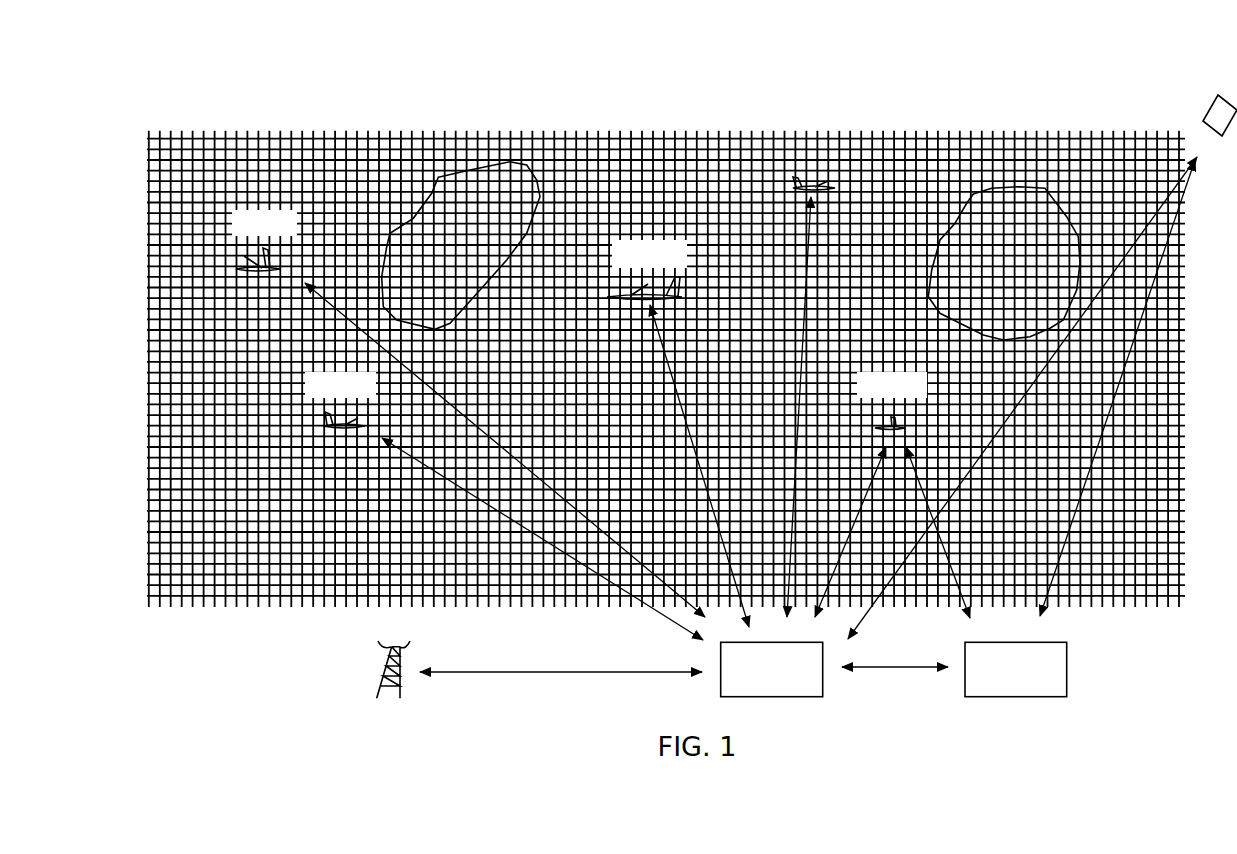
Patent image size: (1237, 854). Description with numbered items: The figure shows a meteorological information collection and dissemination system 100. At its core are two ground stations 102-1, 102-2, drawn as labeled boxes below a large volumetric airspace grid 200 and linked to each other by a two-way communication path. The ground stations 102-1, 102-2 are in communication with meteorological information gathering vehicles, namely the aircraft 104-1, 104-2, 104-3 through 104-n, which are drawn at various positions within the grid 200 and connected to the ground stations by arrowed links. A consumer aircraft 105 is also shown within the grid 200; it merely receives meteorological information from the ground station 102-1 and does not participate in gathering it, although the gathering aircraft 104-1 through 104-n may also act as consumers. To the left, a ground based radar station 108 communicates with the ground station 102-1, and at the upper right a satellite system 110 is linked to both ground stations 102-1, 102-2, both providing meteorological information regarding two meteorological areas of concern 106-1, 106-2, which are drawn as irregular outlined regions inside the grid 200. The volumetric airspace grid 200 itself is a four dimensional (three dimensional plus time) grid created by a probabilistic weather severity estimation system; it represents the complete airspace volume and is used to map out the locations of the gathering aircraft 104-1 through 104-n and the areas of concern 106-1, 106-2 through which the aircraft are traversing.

The meteorological information collection and dissemination system 100 is at (1136, 64).
The volumetric airspace grid 200 is at (1170, 509).
The ground station 102-1 is at (823, 683).
The ground station 102-2 is at (1067, 668).
The aircraft 104-1 is at (265, 246).
The aircraft 104-2 is at (340, 414).
The aircraft 104-3 is at (650, 292).
The aircraft 104-n is at (890, 414).
The consumer aircraft 105 is at (822, 178).
The meteorological area of concern 106-1 is at (472, 198).
The meteorological area of concern 106-2 is at (1008, 208).
The ground based radar station 108 is at (387, 659).
The satellite system 110 is at (1221, 95).